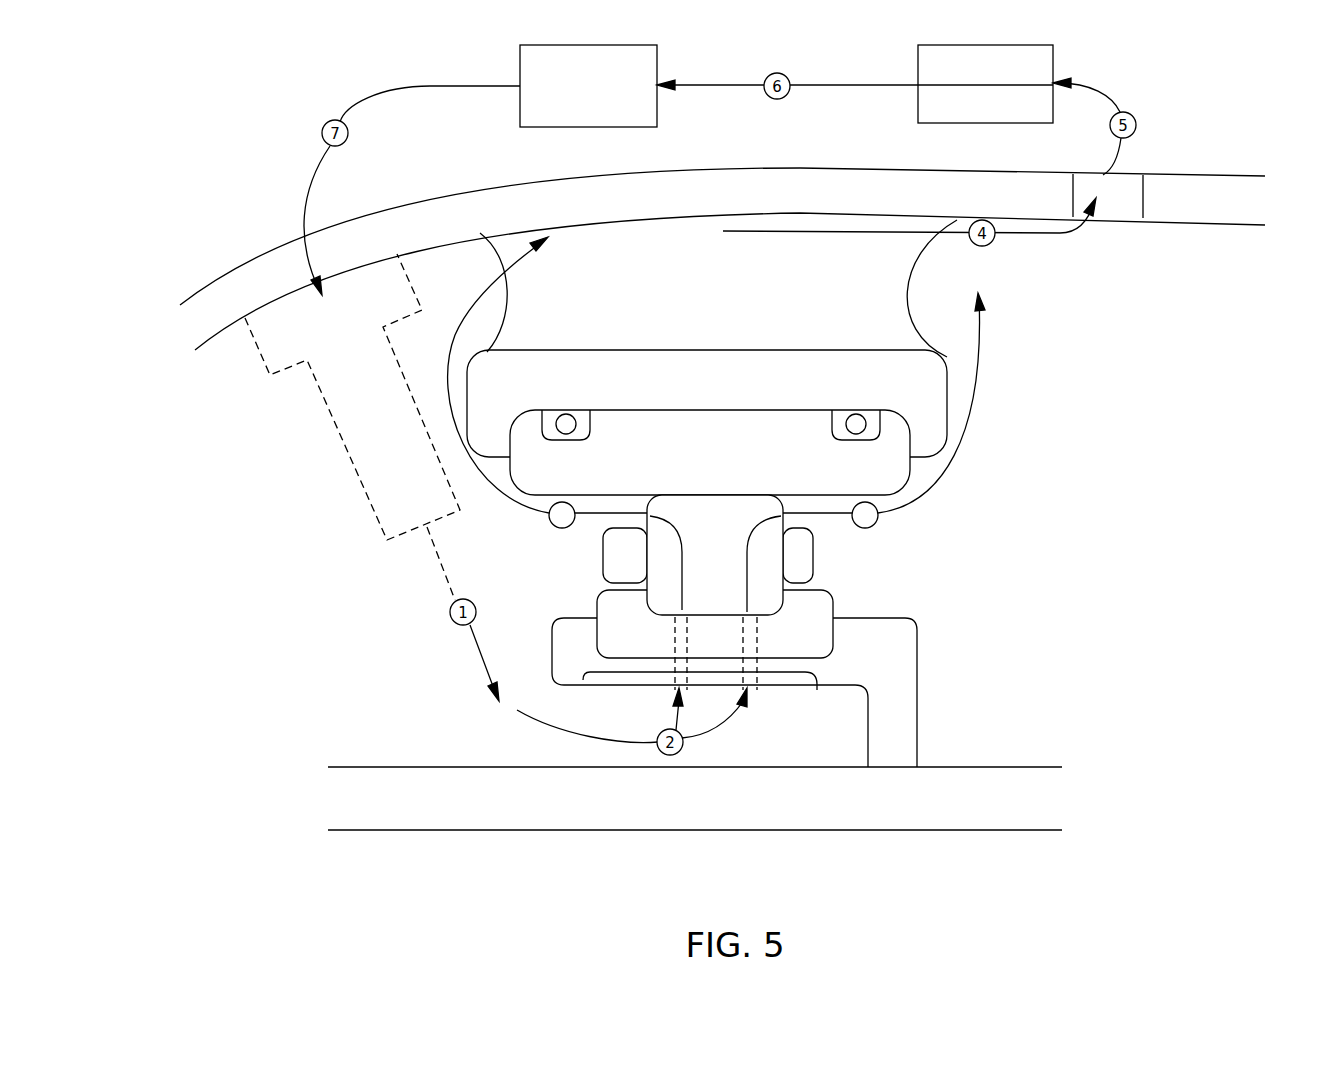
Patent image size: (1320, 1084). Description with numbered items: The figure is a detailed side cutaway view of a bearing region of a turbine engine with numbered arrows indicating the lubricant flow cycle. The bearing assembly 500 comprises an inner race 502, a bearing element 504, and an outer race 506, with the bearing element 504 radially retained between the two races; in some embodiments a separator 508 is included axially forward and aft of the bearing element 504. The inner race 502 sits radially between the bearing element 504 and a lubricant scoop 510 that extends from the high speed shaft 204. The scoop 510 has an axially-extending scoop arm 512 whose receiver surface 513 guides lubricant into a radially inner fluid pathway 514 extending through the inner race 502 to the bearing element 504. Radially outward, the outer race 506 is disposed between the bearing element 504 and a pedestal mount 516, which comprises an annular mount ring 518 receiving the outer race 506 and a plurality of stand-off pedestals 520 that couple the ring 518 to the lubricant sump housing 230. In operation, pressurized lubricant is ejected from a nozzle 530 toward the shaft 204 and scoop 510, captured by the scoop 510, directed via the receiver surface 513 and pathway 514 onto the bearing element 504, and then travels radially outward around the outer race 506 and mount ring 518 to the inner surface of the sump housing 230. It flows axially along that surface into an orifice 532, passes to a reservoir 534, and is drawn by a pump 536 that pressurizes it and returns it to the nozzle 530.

The high speed shaft 204 is at (945, 808).
The lubricant sump housing 230 is at (205, 302).
The bearing assembly 500 is at (985, 555).
The inner race 502 is at (613, 608).
The bearing element 504 is at (763, 557).
The outer race 506 is at (710, 452).
The separator 508 is at (797, 568).
The lubricant scoop 510 is at (897, 718).
The scoop arm 512 is at (843, 635).
The receiver surface 513 is at (800, 677).
The radially inner fluid pathway 514 is at (753, 635).
The pedestal mount 516 is at (1022, 349).
The annular mount ring 518 is at (707, 403).
The stand-off pedestals 520 is at (718, 288).
The nozzle 530 is at (362, 427).
The orifice 532 is at (1135, 208).
The reservoir 534 is at (985, 84).
The pump 536 is at (588, 86).